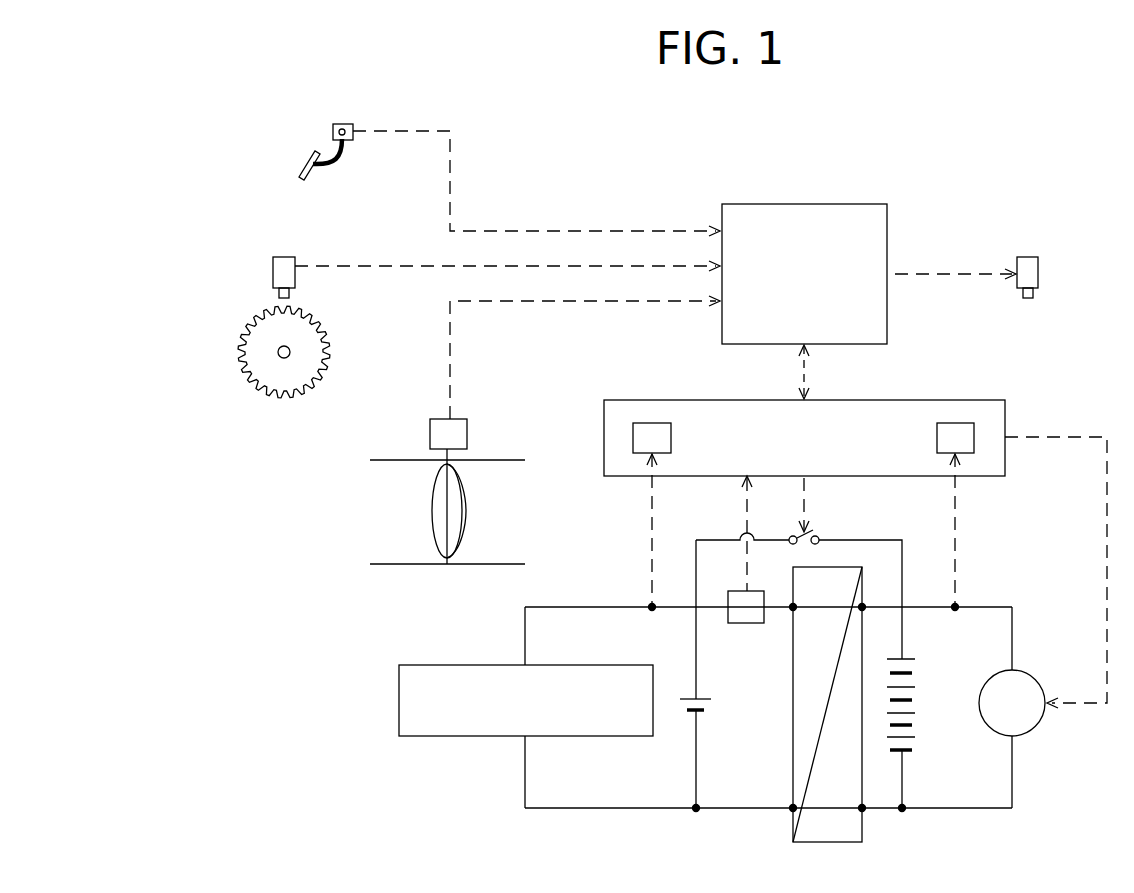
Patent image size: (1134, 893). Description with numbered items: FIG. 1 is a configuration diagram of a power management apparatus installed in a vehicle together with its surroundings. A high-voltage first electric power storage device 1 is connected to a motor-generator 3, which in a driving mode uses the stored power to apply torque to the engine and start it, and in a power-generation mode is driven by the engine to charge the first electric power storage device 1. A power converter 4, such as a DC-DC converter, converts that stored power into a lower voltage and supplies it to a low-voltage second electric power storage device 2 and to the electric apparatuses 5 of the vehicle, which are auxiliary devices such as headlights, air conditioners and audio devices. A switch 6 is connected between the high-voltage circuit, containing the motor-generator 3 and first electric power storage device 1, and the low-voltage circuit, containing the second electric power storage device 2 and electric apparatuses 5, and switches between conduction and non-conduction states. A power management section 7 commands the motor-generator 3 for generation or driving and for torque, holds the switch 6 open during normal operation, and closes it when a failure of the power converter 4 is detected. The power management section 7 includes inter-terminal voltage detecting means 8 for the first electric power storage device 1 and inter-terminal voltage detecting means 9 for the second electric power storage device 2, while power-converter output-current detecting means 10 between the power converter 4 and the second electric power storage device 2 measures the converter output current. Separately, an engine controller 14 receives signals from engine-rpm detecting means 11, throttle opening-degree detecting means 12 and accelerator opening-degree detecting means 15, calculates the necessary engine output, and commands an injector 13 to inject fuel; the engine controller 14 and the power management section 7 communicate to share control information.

The first electric power storage device 1 is at (916, 690).
The second electric power storage device 2 is at (710, 704).
The motor-generator 3 is at (1040, 725).
The power converter 4 is at (862, 830).
The electric apparatuses of the vehicle 5 is at (453, 738).
The switch 6 is at (818, 535).
The power management section 7 is at (604, 428).
The inter-terminal voltage detecting means for the first electric power storage devi 8 is at (958, 423).
The inter-terminal voltage detecting means for the second electric power storage dev 9 is at (645, 423).
The power-converter output-current detecting means 10 is at (738, 623).
The engine-rpm detecting means 11 is at (285, 257).
The throttle opening-degree detecting means 12 is at (430, 433).
The injector 13 is at (1030, 257).
The engine controller 14 is at (810, 204).
The accelerator opening-degree detecting means 15 is at (345, 124).